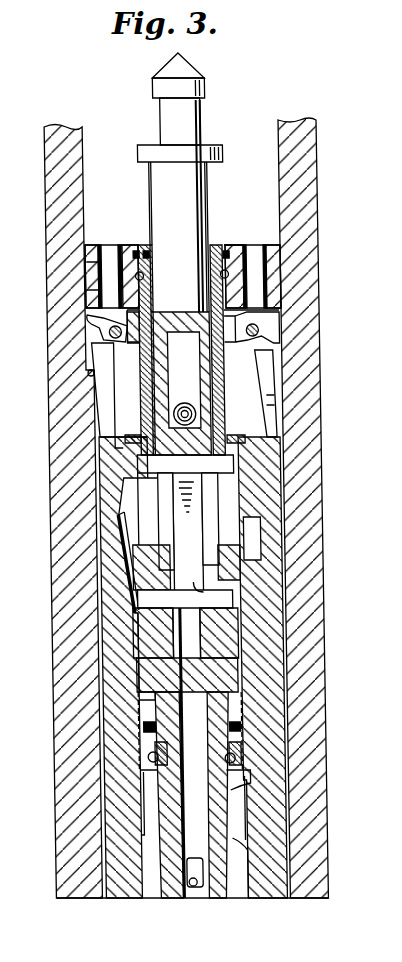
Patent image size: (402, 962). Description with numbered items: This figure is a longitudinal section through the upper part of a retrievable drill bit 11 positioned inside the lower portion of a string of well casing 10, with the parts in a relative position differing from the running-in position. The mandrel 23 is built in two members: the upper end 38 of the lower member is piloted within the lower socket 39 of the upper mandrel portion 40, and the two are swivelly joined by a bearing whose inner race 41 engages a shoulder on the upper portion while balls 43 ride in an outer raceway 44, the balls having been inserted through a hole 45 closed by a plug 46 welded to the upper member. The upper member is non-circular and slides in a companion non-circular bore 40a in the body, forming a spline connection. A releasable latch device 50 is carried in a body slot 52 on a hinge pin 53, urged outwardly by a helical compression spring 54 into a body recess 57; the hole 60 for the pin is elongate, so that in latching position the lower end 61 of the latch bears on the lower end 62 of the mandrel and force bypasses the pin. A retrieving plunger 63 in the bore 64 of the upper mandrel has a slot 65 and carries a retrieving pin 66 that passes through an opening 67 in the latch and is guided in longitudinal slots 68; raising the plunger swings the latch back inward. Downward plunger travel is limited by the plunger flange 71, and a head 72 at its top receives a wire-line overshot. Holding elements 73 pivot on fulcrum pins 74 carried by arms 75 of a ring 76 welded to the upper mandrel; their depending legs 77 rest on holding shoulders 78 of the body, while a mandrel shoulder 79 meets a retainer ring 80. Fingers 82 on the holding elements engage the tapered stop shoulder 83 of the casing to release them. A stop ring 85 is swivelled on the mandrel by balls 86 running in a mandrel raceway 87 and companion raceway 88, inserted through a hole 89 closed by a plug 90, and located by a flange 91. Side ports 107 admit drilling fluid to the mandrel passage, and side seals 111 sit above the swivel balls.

The well casing 10 is at (320, 154).
The drill bit 11 is at (96, 636).
The mandrel 23 is at (236, 850).
The upper end of the mandrel 38 is at (228, 706).
The lower socket 39 is at (216, 692).
The upper mandrel portion 40 is at (230, 672).
The non-circular bore 40a is at (148, 806).
The inner race 41 is at (228, 740).
The balls 43 is at (238, 782).
The outer raceway 44 is at (236, 757).
The hole 45 is at (138, 756).
The plug 46 is at (150, 748).
The releasable latch device 50 is at (165, 524).
The body slot 52 is at (200, 622).
The hinge pin 53 is at (232, 598).
The helical compression spring 54 is at (192, 416).
The recess 57 is at (118, 542).
The hole 60 is at (255, 542).
The lower end of the latch 61 is at (150, 660).
The lower end of the mandrel 62 is at (200, 650).
The retrieving plunger 63 is at (210, 198).
The bore 64 is at (150, 382).
The slot 65 is at (258, 384).
The retrieving pin 66 is at (236, 462).
The opening 67 is at (198, 512).
The longitudinal slots 68 is at (232, 490).
The plunger flange 71 is at (221, 152).
The head 72 is at (205, 80).
The holding elements 73 is at (278, 358).
The fulcrum pin 74 is at (256, 330).
The arms 75 is at (96, 330).
The ring 76 is at (124, 344).
The depending legs 77 is at (106, 432).
The holding shoulders 78 is at (124, 438).
The mandrel shoulder 79 is at (140, 462).
The retainer ring 80 is at (242, 440).
The fingers 82 is at (270, 308).
The stop shoulder 83 is at (84, 373).
The stop ring 85 is at (293, 238).
The balls 86 is at (230, 258).
The mandrel raceway 87 is at (144, 278).
The companion raceway 88 is at (228, 275).
The hole 89 is at (110, 300).
The plug 90 is at (130, 276).
The flange 91 is at (232, 240).
The side ports 107 is at (192, 890).
The side seals 111 is at (153, 253).